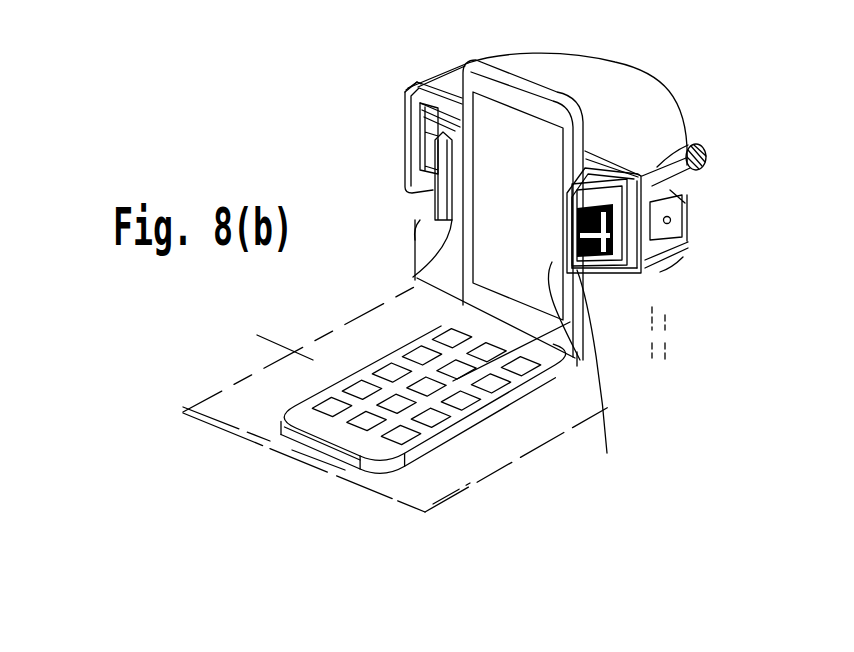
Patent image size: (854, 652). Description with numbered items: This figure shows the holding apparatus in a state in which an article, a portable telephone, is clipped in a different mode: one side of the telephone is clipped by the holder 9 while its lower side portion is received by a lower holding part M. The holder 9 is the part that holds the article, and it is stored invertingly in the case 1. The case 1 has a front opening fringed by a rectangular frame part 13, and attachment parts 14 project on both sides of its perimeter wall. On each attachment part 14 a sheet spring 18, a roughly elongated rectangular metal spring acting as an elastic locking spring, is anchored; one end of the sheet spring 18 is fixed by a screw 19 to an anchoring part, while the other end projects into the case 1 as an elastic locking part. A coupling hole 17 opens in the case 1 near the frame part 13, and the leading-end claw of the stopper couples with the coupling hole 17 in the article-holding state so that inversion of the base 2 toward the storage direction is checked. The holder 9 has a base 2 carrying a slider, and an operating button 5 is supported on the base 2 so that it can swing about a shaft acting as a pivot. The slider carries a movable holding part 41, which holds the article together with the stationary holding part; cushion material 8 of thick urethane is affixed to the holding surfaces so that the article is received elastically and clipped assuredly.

The case 1 is at (690, 106).
The base 2 is at (587, 270).
The operating button 5 is at (647, 265).
The cushion material 8 is at (413, 268).
The holder 9 is at (415, 234).
The frame part 13 is at (410, 85).
The attachment part 14 is at (404, 119).
The coupling hole 17 is at (670, 248).
The sheet spring 18 is at (675, 189).
The screw 19 is at (702, 163).
The movable holding part 41 is at (423, 213).
The lower holding part M is at (242, 330).